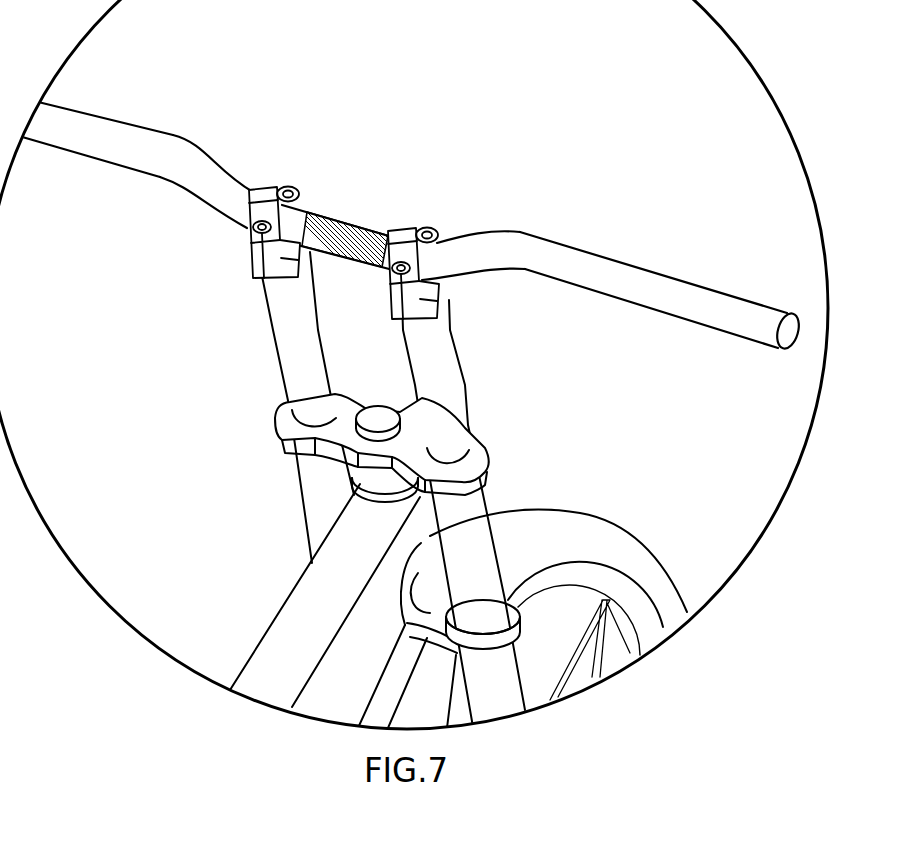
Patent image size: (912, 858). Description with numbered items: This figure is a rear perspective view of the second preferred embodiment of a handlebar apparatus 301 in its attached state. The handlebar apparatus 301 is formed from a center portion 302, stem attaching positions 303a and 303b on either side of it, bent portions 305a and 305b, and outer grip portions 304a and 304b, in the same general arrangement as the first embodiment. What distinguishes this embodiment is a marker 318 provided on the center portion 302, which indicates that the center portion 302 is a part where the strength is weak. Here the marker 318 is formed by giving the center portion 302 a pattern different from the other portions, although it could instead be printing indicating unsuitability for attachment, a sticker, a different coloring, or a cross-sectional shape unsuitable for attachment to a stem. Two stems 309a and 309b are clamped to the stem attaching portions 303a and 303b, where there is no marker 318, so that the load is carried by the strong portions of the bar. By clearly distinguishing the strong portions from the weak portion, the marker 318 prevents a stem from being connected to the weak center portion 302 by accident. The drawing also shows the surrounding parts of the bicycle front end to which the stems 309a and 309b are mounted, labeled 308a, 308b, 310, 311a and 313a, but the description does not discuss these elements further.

The handlebar apparatus 301 is at (753, 276).
The center portion 302 is at (363, 216).
The stem attaching position 303a is at (242, 217).
The stem attaching position 303b is at (443, 270).
The grip portion 304a is at (108, 131).
The grip portion 304b is at (628, 277).
The bent portion 305a is at (203, 170).
The bent portion 305b is at (477, 250).
The first fork tube 308a is at (281, 345).
The second fork tube 308b is at (450, 378).
The stem 309a is at (248, 243).
The stem 309b is at (443, 295).
The front wheel and frame 310 is at (417, 531).
The steering stem 311a is at (378, 405).
The upper fork crown 313a is at (293, 447).
The marker 318 is at (335, 258).